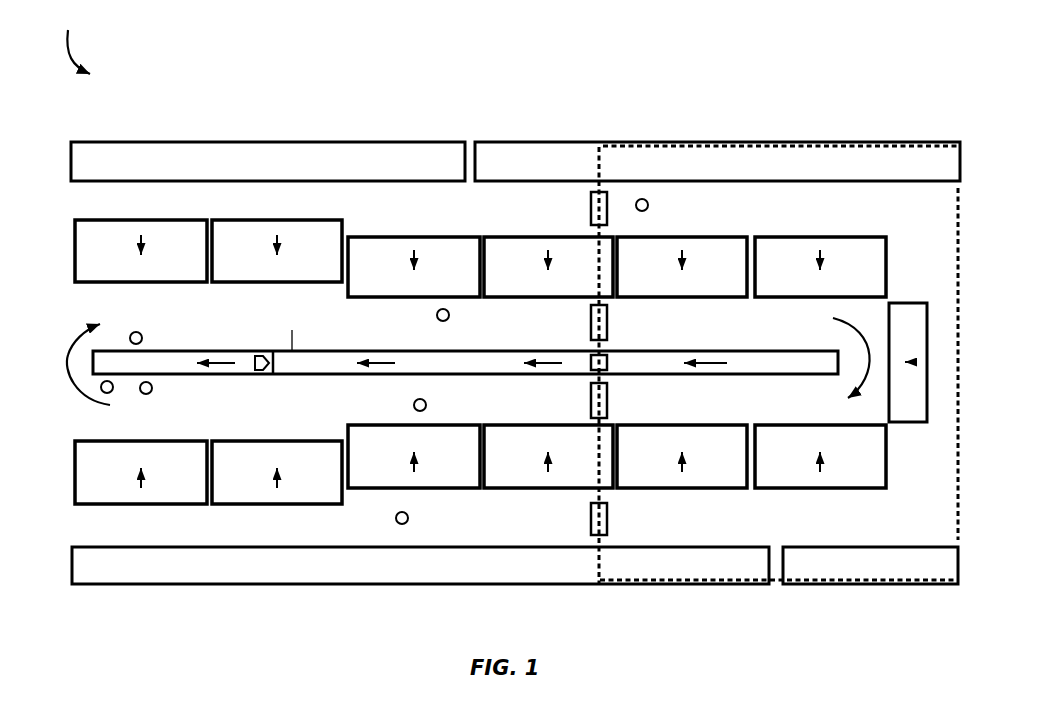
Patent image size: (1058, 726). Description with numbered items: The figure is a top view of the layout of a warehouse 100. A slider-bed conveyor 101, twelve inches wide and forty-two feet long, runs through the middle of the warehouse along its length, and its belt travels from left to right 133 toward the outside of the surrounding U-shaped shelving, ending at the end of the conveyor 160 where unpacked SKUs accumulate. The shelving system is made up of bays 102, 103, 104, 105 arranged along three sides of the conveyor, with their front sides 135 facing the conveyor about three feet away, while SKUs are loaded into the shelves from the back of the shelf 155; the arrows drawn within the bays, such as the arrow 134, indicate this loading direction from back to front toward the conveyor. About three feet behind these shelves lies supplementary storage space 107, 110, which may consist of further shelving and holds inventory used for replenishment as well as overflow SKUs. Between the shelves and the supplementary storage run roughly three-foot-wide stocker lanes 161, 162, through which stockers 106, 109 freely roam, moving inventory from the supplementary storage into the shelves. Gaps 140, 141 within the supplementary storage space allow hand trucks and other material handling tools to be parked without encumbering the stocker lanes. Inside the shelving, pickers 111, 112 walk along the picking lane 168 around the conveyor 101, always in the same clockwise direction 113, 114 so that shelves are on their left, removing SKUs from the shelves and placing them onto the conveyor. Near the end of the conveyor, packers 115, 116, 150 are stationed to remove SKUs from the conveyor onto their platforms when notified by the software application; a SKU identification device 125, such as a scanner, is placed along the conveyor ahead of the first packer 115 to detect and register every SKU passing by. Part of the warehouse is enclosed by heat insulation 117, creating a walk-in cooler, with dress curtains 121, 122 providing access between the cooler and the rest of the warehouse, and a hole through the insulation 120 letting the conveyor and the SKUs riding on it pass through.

The warehouse 100 is at (67, 39).
The slider-bed conveyor 101 is at (476, 352).
The shelving bay 102 is at (75, 238).
The shelving bay 103 is at (73, 492).
The shelving bay 104 is at (452, 473).
The shelving bay 105 is at (906, 422).
The stocker 106 is at (648, 209).
The supplementary storage space 107 is at (515, 145).
The stocker 109 is at (408, 519).
The supplementary storage space 110 is at (515, 577).
The picker 111 is at (437, 318).
The picker 112 is at (426, 405).
The clockwise direction 113 is at (840, 403).
The clockwise direction 114 is at (70, 352).
The first packer 115 is at (152, 388).
The packer 116 is at (141, 335).
The heat insulation 117 is at (957, 226).
The hole through the insulation 120 is at (607, 358).
The dress curtain 121 is at (590, 400).
The dress curtain 122 is at (590, 212).
The SKU identification device 125 is at (258, 356).
The belt travel direction 133 is at (704, 368).
The module direction 134 is at (276, 482).
The front side of shelving 135 is at (708, 298).
The gap 140 is at (468, 155).
The gap 141 is at (774, 568).
The packer 150 is at (110, 392).
The back of the shelf 155 is at (385, 237).
The end of the conveyor 160 is at (105, 370).
The stocker lane 161 is at (190, 197).
The stocker lane 162 is at (568, 522).
The picking lane 168 is at (292, 330).